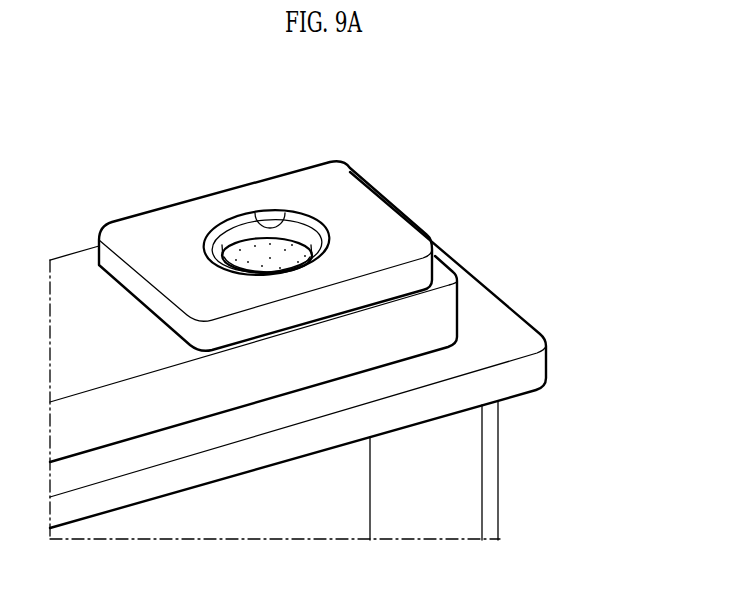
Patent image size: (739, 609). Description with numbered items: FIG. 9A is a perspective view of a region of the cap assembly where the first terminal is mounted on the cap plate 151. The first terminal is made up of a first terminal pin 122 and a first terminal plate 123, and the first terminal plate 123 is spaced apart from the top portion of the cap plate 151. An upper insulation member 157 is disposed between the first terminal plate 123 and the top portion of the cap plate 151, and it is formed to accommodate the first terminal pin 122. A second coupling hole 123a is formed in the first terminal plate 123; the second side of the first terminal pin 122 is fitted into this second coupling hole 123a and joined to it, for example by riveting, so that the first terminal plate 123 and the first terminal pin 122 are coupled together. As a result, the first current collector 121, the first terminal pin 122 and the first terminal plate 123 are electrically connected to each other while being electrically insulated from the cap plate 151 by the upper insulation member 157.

The first current collector 121 is at (523, 465).
The first terminal pin 122 is at (233, 237).
The first terminal plate 123 is at (338, 182).
The second coupling hole 123a is at (262, 222).
The cap plate 151 is at (502, 325).
The upper insulation member 157 is at (447, 277).